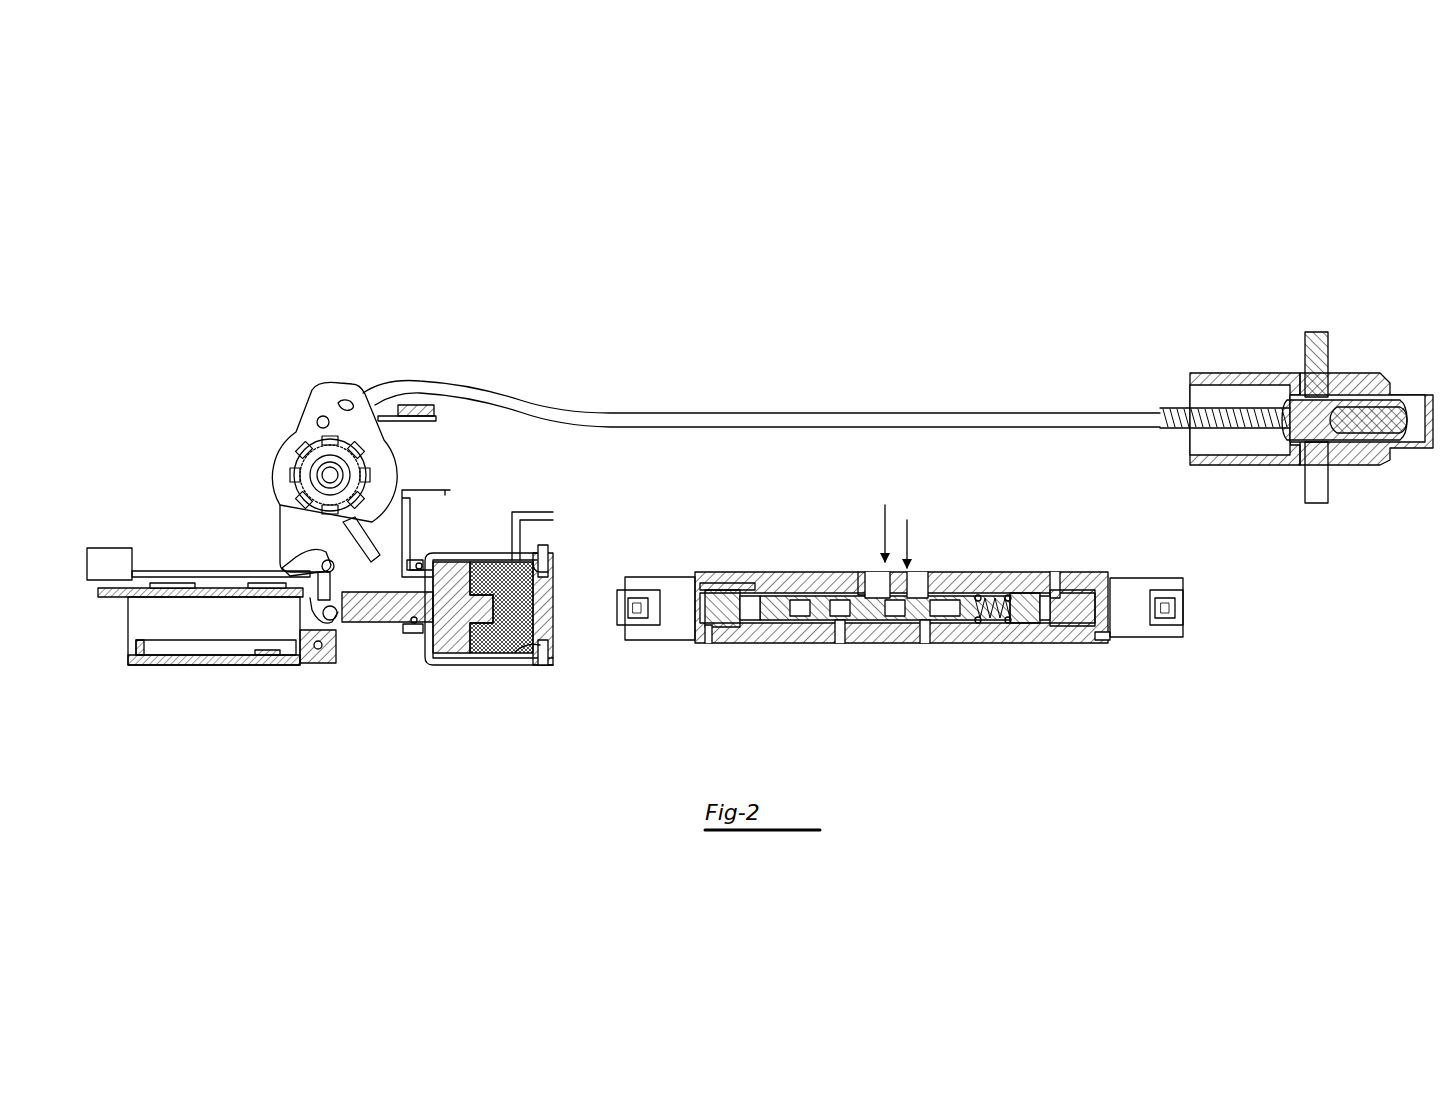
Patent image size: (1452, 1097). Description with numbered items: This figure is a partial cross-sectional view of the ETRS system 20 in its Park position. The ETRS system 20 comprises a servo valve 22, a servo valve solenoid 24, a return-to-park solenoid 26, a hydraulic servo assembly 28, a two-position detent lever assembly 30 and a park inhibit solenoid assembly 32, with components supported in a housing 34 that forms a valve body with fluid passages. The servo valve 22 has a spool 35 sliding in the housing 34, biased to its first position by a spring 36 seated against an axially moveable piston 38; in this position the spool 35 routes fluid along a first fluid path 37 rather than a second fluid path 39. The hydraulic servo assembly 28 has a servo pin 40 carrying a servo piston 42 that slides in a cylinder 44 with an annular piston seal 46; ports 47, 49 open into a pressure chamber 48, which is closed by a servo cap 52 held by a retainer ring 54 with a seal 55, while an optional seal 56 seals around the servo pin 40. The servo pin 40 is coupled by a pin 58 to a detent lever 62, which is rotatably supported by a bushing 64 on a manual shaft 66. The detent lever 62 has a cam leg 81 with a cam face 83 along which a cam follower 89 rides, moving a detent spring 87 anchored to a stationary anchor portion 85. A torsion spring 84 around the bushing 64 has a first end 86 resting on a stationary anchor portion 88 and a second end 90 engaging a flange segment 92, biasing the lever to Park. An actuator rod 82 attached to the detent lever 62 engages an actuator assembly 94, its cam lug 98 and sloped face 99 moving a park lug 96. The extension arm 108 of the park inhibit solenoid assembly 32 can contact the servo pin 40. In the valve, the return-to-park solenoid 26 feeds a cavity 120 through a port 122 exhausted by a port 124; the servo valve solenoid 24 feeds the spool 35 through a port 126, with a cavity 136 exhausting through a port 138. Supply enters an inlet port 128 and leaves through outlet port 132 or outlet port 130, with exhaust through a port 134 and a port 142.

The ETRS system 20 is at (1002, 243).
The servo valve 22 is at (815, 648).
The servo valve solenoid 24 is at (657, 640).
The return-to-park solenoid 26 is at (1143, 578).
The hydraulic servo assembly 28 is at (470, 665).
The two-position detent lever assembly 30 is at (280, 404).
The park inhibit solenoid assembly 32 is at (170, 668).
The housing 34 is at (982, 572).
The spool 35 is at (793, 600).
The spring 36 is at (1010, 624).
The first fluid path 37 is at (535, 512).
The piston 38 is at (1028, 625).
The second fluid path 39 is at (440, 492).
The servo pin 40 is at (372, 622).
The servo piston 42 is at (464, 622).
The cylinder 44 is at (548, 652).
The annular piston seal 46 is at (443, 660).
The port 47 is at (512, 556).
The pressure chamber 48 is at (498, 640).
The port 49 is at (428, 568).
The servo cap 52 is at (548, 632).
The retainer ring 54 is at (552, 566).
The seal 55 is at (548, 578).
The seal 56 is at (416, 625).
The pin 58 is at (337, 620).
The detent lever 62 is at (330, 390).
The bushing 64 is at (345, 470).
The manual shaft 66 is at (325, 475).
The cam leg 81 is at (280, 515).
The actuator rod 82 is at (463, 394).
The cam face 83 is at (322, 592).
The torsion spring 84 is at (392, 411).
The stationary anchor portion 85 is at (107, 548).
The first end of the torsion spring 86 is at (418, 419).
The detent spring 87 is at (160, 572).
The stationary anchor portion 88 is at (415, 404).
The cam follower 89 is at (292, 568).
The second end of the torsion spring 90 is at (416, 520).
The flange segment 92 is at (345, 546).
The actuator assembly 94 is at (1230, 327).
The park lug 96 is at (1330, 345).
The cam lug 98 is at (1360, 422).
The sloped face 99 is at (1330, 395).
The extension arm 108 is at (316, 648).
The cavity 120 is at (1058, 588).
The port 122 is at (1052, 580).
The port 124 is at (1088, 642).
The port 126 is at (745, 585).
The inlet port 128 is at (880, 570).
The outlet port 130 is at (914, 572).
The outlet port 132 is at (866, 565).
The port 134 is at (838, 642).
The cavity 136 is at (748, 622).
The port 138 is at (712, 650).
The port 142 is at (925, 643).